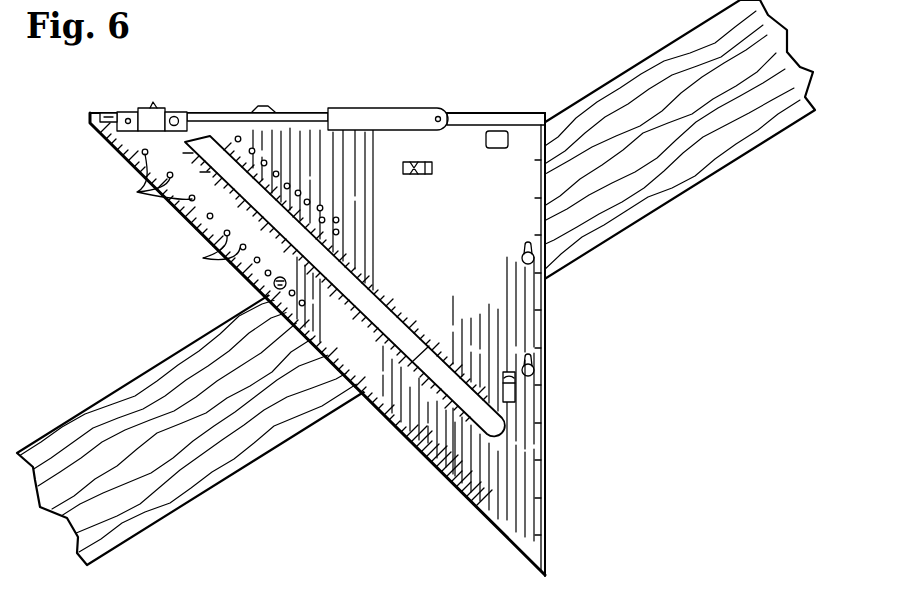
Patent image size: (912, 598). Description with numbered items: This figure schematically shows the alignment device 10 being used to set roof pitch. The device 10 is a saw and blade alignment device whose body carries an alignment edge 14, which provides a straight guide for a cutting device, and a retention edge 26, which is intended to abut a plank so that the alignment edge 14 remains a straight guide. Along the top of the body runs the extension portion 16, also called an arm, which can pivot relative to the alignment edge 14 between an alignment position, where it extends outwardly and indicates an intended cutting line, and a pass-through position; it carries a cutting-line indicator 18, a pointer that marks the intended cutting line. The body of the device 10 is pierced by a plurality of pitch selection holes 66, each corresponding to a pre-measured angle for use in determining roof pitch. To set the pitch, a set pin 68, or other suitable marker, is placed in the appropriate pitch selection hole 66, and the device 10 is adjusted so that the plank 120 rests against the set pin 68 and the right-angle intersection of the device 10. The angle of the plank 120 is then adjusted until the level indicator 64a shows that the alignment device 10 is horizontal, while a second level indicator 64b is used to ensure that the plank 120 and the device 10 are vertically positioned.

The alignment device 10 is at (597, 356).
The alignment edge 14 is at (547, 153).
The extension portion 16 is at (372, 110).
The cutting-line indicator 18 is at (157, 108).
The retention edge 26 is at (97, 113).
The level indicator 64a is at (490, 206).
The second level indicator 64b is at (514, 389).
The pitch selection holes 66 is at (174, 214).
The set pin 68 is at (274, 287).
The plank 120 is at (695, 175).